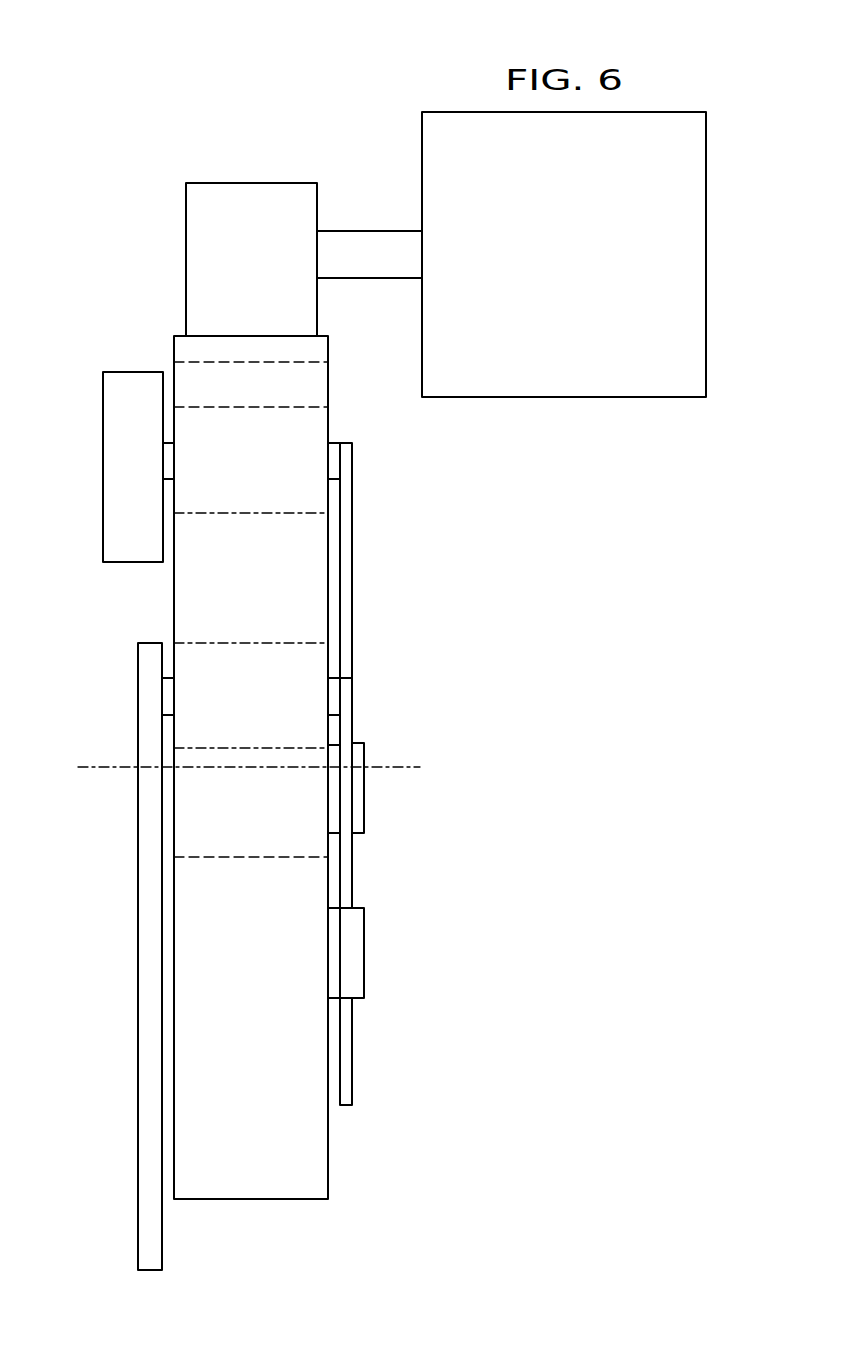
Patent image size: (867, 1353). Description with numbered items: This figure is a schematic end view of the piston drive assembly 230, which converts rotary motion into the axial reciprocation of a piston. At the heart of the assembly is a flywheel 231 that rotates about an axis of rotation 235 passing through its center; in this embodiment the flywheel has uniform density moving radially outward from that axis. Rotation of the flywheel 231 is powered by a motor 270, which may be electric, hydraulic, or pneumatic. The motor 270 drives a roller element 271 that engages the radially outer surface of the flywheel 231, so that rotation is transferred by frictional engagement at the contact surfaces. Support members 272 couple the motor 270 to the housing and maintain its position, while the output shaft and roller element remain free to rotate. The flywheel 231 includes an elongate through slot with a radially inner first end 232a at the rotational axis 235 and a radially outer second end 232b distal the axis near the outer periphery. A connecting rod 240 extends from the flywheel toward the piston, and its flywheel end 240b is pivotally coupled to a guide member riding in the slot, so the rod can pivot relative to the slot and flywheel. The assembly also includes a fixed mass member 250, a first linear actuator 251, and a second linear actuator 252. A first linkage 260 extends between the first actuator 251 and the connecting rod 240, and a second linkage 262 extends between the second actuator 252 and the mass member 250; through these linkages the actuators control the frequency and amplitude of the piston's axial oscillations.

The piston drive assembly 230 is at (132, 112).
The flywheel 231 is at (328, 1148).
The first end of the elongate slot 232a is at (253, 858).
The second end of the elongate slot 232b is at (308, 364).
The axis of rotation 235 is at (100, 768).
The connecting rod 240 is at (138, 1032).
The flywheel end of the connecting rod 240b is at (138, 703).
The mass member 250 is at (133, 372).
The first linear actuator 251 is at (364, 953).
The second linear actuator 252 is at (364, 793).
The first linkage 260 is at (352, 1050).
The second linkage 262 is at (355, 593).
The motor 270 is at (587, 270).
The roller element 271 is at (273, 277).
The support members 272 is at (253, 513).